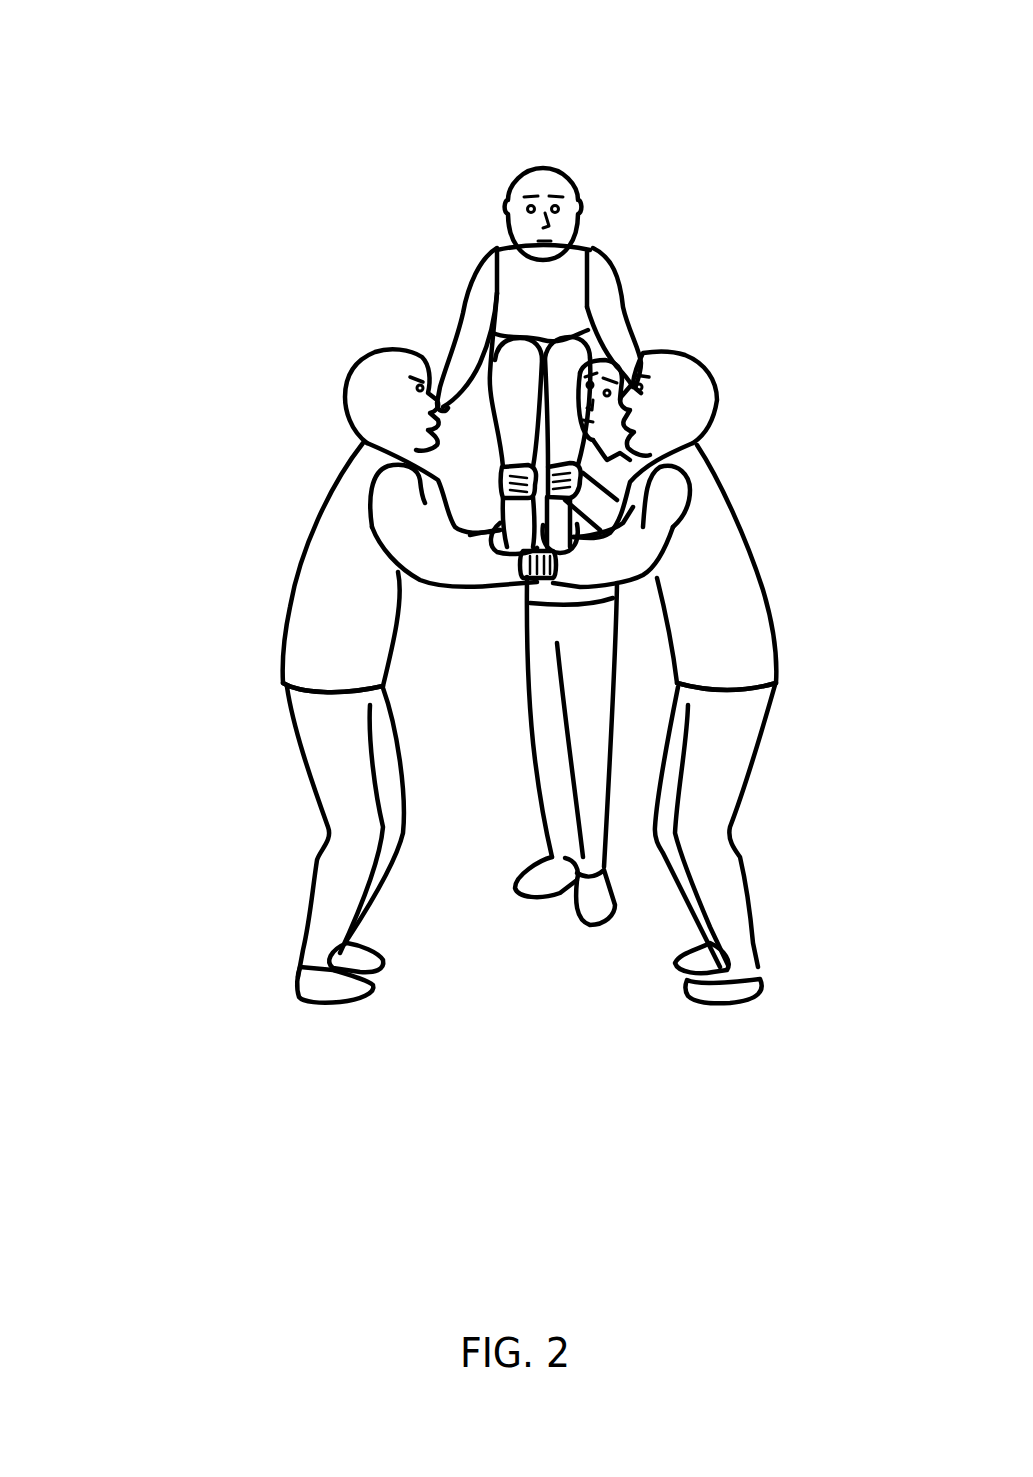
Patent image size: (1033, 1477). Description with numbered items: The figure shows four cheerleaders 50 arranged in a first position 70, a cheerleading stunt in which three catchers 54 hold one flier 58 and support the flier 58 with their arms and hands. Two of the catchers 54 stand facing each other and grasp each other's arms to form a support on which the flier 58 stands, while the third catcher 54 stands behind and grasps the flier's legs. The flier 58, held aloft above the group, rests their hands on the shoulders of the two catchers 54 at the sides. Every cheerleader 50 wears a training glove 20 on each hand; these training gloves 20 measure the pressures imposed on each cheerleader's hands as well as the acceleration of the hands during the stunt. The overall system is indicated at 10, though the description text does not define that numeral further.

The system 10 is at (153, 90).
The first position 70 is at (773, 178).
The cheerleader 50 is at (605, 276).
The catcher 54 is at (313, 612).
The flier 58 is at (612, 311).
The training glove 20 is at (503, 481).